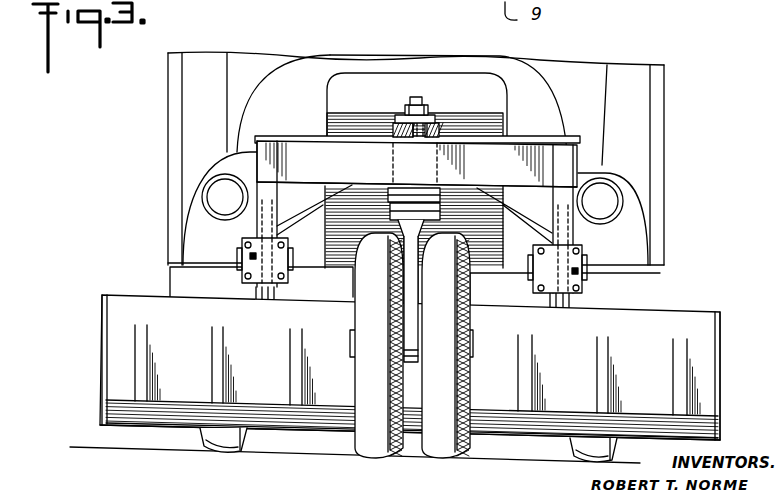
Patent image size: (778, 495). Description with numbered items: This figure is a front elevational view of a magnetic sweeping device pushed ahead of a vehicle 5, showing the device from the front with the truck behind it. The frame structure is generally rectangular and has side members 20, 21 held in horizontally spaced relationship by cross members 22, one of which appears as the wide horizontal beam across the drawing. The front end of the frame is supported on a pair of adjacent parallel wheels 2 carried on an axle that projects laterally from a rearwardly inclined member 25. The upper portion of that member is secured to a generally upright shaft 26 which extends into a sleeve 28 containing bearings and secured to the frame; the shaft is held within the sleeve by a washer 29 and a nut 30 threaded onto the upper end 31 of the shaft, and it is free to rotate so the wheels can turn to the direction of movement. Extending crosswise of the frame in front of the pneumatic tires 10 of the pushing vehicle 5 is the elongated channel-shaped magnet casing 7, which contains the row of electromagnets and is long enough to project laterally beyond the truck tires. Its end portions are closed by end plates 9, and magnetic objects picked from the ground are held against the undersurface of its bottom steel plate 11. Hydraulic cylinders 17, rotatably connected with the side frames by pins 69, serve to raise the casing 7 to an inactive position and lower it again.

The wheels 2 is at (442, 458).
The vehicle 5 is at (632, 63).
The magnet casing 7 is at (120, 295).
The end plates 9 is at (102, 339).
The pneumatic tires 10 is at (222, 454).
The bottom steel plate 11 is at (143, 428).
The hydraulic cylinders 17 is at (286, 239).
The side member 20 is at (253, 218).
The side member 21 is at (583, 237).
The cross members 22 is at (520, 175).
The rearwardly inclined member 25 is at (410, 347).
The upright shaft 26 is at (413, 137).
The sleeve 28 is at (440, 130).
The washer 29 is at (428, 120).
The nut 30 is at (405, 108).
The upper end of shaft 31 is at (418, 97).
The pins 69 is at (250, 257).